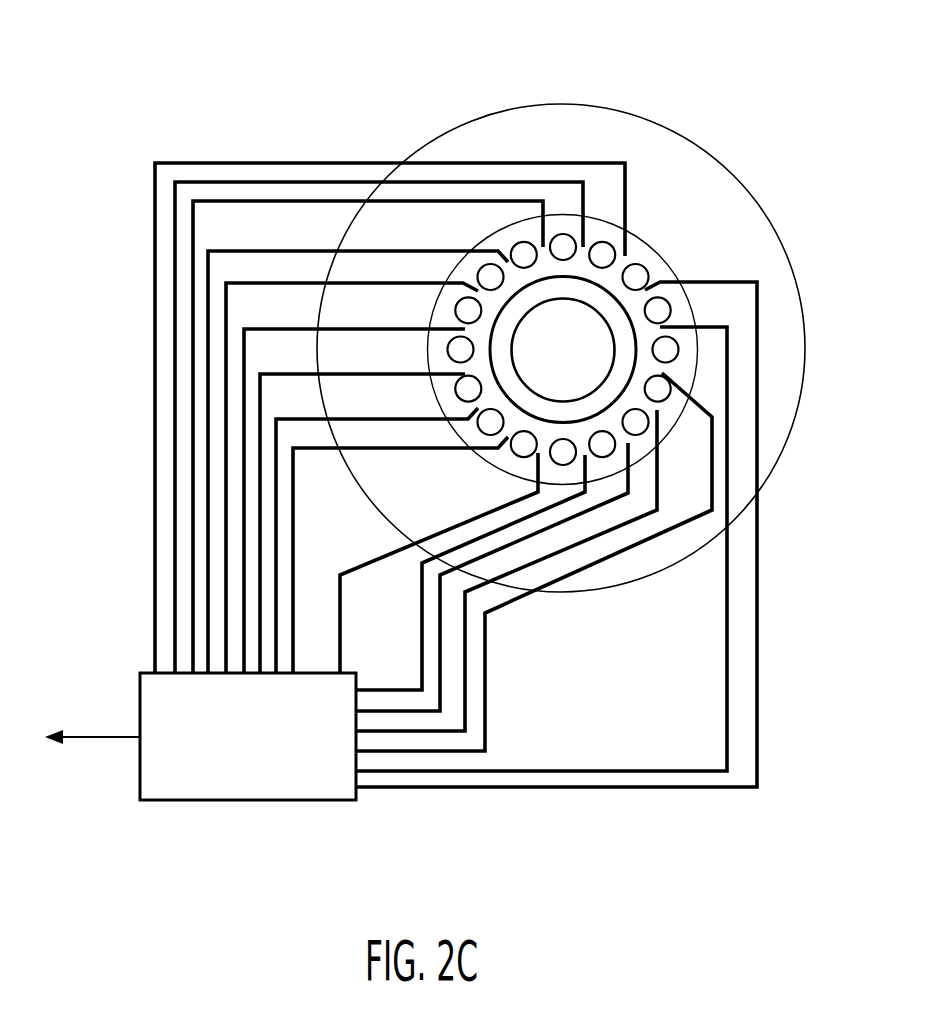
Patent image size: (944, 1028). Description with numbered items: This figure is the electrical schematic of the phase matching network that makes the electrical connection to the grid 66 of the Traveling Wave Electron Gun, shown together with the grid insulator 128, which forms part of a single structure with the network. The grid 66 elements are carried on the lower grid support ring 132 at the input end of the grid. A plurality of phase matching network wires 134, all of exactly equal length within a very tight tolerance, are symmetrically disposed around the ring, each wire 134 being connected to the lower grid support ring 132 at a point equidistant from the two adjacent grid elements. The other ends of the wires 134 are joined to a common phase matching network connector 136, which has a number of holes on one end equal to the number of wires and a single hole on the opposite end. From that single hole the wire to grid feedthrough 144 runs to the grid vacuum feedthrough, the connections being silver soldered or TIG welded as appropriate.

The grid insulator 128 is at (613, 128).
The lower grid support ring 132 is at (633, 248).
The grid 66 is at (635, 273).
The phase matching network wire 134 is at (230, 160).
The phase matching network connector 136 is at (247, 802).
The wire to grid feedthrough 144 is at (95, 732).